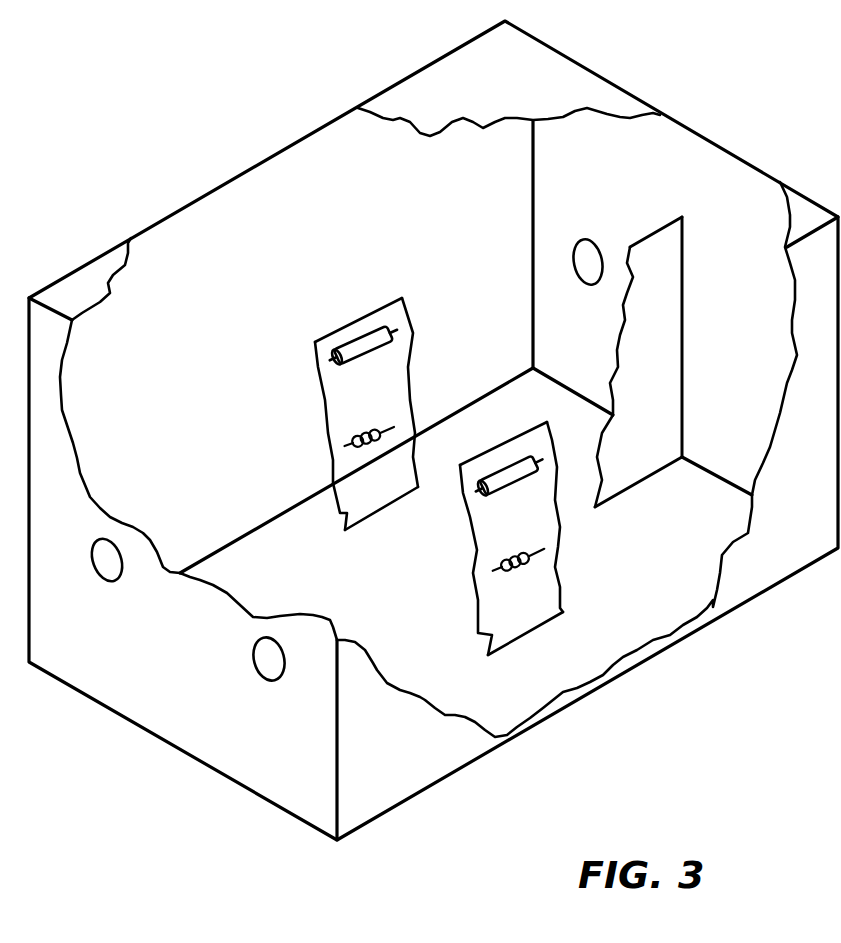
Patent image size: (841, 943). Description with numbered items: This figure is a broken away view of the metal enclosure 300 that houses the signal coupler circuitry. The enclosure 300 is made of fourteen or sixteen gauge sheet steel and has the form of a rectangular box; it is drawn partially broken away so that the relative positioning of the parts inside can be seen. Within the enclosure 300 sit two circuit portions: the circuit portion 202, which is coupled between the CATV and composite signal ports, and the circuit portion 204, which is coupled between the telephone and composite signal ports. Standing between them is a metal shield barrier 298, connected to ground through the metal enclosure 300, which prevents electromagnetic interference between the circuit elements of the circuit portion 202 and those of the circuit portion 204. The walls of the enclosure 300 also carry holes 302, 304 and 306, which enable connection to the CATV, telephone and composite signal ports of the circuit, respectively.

The metal enclosure 300 is at (697, 132).
The metal shield barrier 298 is at (665, 345).
The hole 302 is at (103, 570).
The hole 304 is at (273, 658).
The hole 306 is at (590, 262).
The circuit portion 202 is at (360, 318).
The circuit portion 204 is at (533, 597).